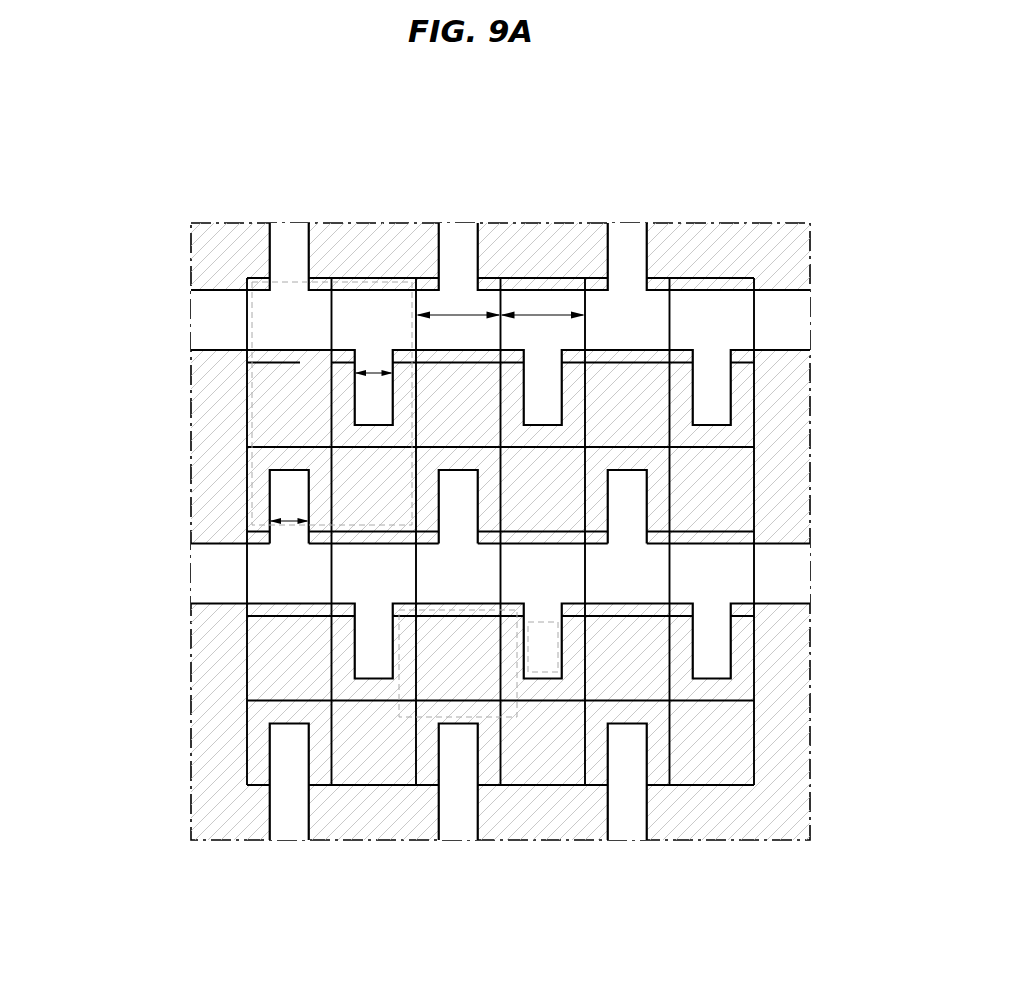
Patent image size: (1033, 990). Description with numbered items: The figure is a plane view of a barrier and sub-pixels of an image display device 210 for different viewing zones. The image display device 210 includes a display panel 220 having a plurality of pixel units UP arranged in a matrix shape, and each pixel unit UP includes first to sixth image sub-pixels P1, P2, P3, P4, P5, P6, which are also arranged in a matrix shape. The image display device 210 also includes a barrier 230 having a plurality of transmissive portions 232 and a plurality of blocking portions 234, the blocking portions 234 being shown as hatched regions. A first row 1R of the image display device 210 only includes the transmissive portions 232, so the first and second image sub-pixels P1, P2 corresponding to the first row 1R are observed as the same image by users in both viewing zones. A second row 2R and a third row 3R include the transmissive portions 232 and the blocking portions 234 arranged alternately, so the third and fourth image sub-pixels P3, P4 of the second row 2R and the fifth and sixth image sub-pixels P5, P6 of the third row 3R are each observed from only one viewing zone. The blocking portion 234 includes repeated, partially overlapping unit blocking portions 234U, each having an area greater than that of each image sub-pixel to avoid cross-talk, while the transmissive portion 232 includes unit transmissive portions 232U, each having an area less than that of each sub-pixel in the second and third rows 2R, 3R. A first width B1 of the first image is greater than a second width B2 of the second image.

The image display device 210 is at (769, 176).
The display panel 220 is at (457, 277).
The barrier 230 is at (416, 531).
The transmissive portion 232 is at (196, 318).
The blocking portion 234 is at (196, 430).
The unit transmissive portion 232U is at (538, 672).
The unit blocking portion 234U is at (410, 718).
The pixel unit UP is at (282, 283).
The first width B1 is at (500, 305).
The second width B2 is at (366, 372).
The first row 1R is at (830, 320).
The second row 2R is at (830, 405).
The third row 3R is at (830, 488).
The first image sub-pixel P1 is at (458, 448).
The second image sub-pixel P2 is at (542, 448).
The third image sub-pixel P3 is at (458, 535).
The fourth image sub-pixel P4 is at (542, 535).
The fifth image sub-pixel P5 is at (458, 618).
The sixth image sub-pixel P6 is at (542, 618).